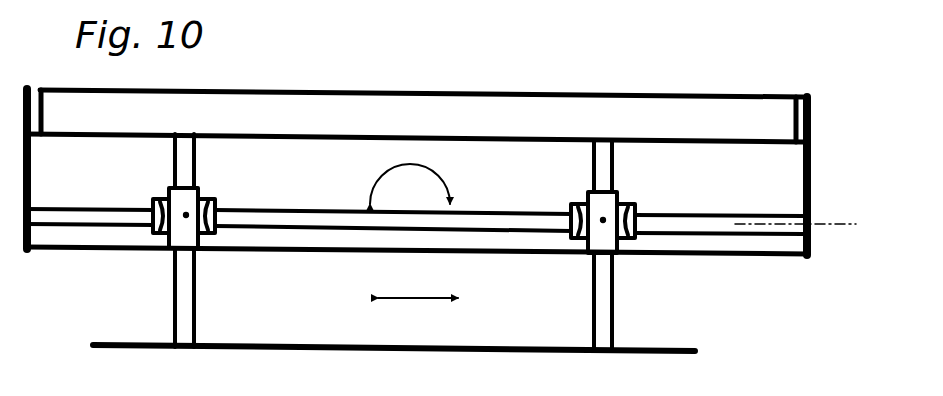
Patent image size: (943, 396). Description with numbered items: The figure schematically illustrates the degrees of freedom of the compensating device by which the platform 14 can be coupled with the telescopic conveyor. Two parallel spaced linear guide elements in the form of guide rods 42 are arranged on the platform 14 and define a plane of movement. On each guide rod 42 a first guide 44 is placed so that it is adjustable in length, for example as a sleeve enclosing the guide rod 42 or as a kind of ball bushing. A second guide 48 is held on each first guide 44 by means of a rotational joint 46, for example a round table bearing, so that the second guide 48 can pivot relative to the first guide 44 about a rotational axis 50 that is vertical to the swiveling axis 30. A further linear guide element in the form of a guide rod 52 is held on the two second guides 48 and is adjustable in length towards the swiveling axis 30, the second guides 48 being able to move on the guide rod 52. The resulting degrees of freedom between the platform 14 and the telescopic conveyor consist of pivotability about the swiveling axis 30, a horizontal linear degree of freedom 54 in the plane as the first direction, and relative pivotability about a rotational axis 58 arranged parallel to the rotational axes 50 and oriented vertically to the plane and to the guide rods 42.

The platform 14 is at (672, 357).
The swiveling axis 30 is at (827, 228).
The guide rods 42 is at (197, 324).
The first guide 44 is at (205, 250).
The rotational joint 46 is at (160, 228).
The second guide 48 is at (199, 197).
The rotational axis 50 is at (190, 210).
The guide rod 52 is at (717, 227).
The horizontal linear degree of freedom 54 is at (425, 300).
The rotational axis 58 is at (423, 196).